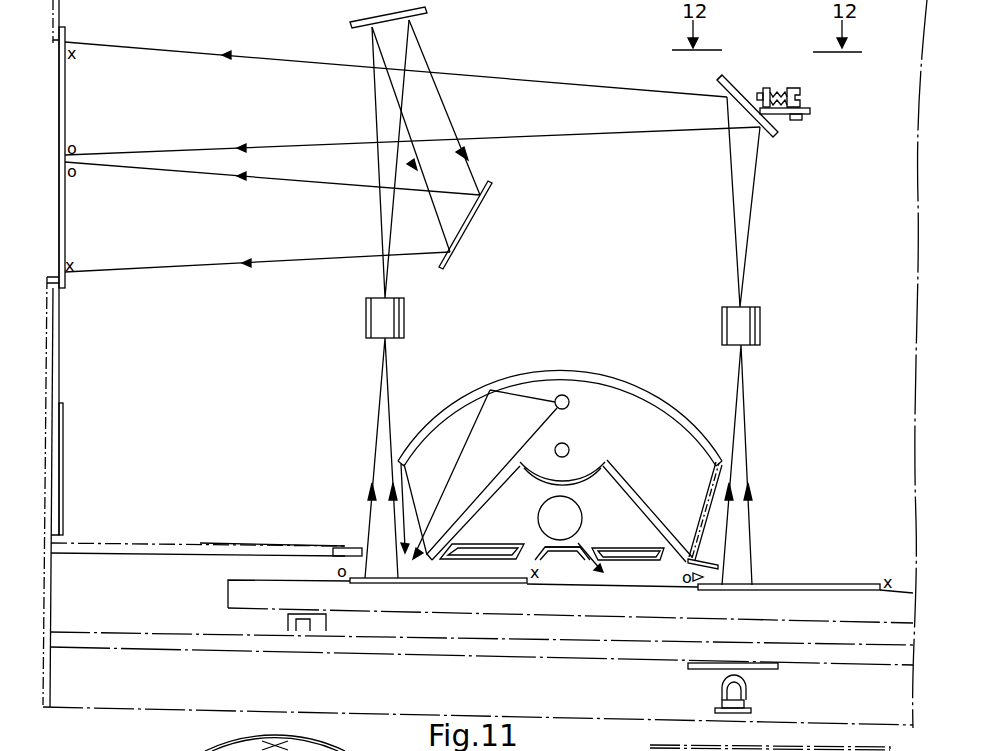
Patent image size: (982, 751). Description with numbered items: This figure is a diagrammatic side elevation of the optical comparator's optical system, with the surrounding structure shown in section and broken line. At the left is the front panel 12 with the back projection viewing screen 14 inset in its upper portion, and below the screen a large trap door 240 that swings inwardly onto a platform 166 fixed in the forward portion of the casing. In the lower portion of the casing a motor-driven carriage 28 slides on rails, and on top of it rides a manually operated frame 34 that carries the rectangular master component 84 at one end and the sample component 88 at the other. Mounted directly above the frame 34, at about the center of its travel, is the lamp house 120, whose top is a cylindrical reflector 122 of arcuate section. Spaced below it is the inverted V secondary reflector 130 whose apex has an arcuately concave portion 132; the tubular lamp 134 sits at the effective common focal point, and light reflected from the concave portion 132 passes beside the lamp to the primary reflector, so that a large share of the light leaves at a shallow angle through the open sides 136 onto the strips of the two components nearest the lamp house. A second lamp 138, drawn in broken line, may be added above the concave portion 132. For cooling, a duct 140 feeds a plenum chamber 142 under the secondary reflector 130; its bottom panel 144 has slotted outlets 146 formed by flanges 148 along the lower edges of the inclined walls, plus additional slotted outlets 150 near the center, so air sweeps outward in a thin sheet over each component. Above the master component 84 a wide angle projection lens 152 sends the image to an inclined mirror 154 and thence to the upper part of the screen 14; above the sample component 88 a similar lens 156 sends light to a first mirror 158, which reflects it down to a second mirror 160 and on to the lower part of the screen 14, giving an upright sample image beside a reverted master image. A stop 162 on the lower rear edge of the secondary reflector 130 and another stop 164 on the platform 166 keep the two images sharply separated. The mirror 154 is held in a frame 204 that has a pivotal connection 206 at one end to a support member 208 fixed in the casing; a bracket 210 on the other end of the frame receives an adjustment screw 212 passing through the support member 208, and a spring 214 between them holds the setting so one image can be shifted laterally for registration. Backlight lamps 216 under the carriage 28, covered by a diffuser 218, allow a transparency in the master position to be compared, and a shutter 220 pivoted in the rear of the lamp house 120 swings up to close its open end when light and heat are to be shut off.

The front panel 12 is at (55, 367).
The viewing screen 14 is at (56, 212).
The carriage 28 is at (386, 658).
The frame 34 is at (222, 588).
The master component 84 is at (814, 585).
The sample component 88 is at (443, 585).
The lamp house 120 is at (648, 383).
The reflector 122 is at (619, 390).
The secondary reflector 130 is at (490, 484).
The concave portion 132 is at (579, 473).
The tubular lamp 134 is at (567, 395).
The open sides 136 is at (406, 470).
The second lamp 138 is at (568, 446).
The duct 140 is at (545, 510).
The plenum chamber 142 is at (620, 510).
The bottom panel 144 is at (632, 553).
The slotted outlets 146 is at (422, 571).
The flanges 148 is at (527, 552).
The additional slotted outlets 150 is at (590, 545).
The wide angle projection lens 152 is at (760, 327).
The inclined mirror 154 is at (768, 138).
The lens 156 is at (372, 316).
The first mirror 158 is at (427, 13).
The second mirror 160 is at (493, 182).
The stop 162 is at (712, 565).
The stop 164 is at (358, 550).
The platform 166 is at (252, 543).
The frame 204 is at (717, 78).
The foot 206 is at (803, 119).
The support member 208 is at (810, 111).
The bracket 210 is at (767, 88).
The adjustment screw 212 is at (803, 93).
The spring 214 is at (784, 88).
The backlight lamps 216 is at (745, 692).
The diffuser 218 is at (687, 668).
The shutter 220 is at (707, 480).
The trap door 240 is at (61, 433).